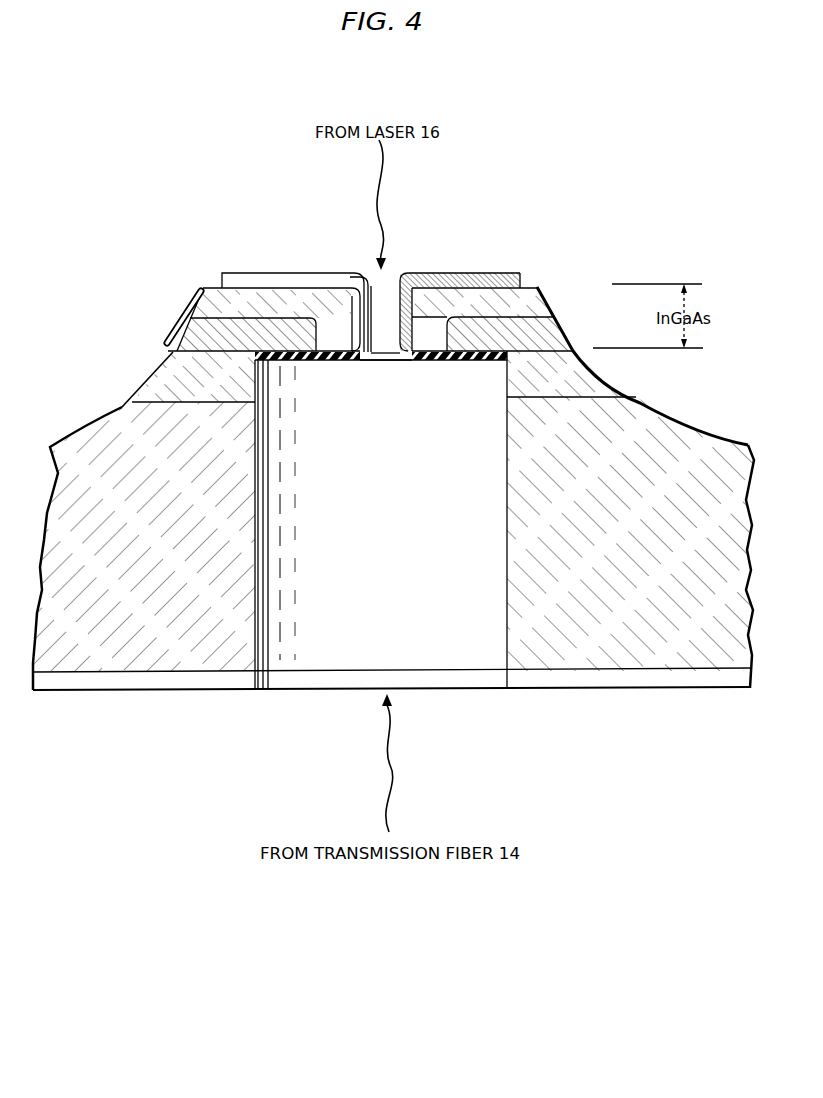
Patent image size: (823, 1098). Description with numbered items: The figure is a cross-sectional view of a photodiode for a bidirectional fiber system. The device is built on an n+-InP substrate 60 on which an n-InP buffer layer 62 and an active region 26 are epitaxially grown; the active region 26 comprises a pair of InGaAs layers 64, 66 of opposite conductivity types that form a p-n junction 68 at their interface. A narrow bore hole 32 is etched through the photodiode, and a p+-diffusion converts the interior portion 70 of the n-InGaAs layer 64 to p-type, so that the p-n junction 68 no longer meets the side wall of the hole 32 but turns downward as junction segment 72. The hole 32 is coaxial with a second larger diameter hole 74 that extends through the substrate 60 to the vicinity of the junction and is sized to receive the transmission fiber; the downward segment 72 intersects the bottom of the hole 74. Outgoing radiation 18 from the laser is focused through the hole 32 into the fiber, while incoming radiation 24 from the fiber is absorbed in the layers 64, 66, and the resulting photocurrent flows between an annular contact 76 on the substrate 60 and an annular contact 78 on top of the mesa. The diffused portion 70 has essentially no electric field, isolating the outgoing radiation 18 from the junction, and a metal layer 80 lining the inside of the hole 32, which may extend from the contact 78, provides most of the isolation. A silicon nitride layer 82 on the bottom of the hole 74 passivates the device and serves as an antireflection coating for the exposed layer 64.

The outgoing radiation 18 is at (379, 190).
The incoming radiation 24 is at (392, 772).
The active region 26 is at (184, 319).
The hole 32 is at (388, 281).
The n+-InP substrate 60 is at (665, 428).
The n-InP buffer layer 62 is at (598, 378).
The n-InGaAs layer 64 is at (553, 331).
The InGaAs layer 66 is at (546, 311).
The p-n junction 68 is at (540, 306).
The interior portion 70 is at (337, 338).
The junction segment 72 is at (310, 340).
The second larger diameter hole 74 is at (343, 648).
The annular contact 76 is at (196, 687).
The annular contact 78 is at (305, 273).
The metal layer 80 is at (358, 310).
The silicon nitride layer 82 is at (327, 362).